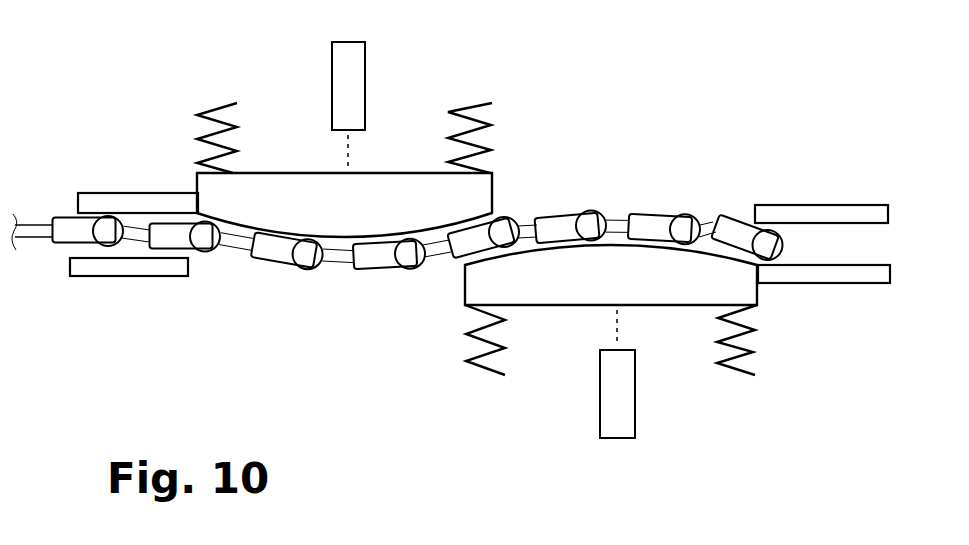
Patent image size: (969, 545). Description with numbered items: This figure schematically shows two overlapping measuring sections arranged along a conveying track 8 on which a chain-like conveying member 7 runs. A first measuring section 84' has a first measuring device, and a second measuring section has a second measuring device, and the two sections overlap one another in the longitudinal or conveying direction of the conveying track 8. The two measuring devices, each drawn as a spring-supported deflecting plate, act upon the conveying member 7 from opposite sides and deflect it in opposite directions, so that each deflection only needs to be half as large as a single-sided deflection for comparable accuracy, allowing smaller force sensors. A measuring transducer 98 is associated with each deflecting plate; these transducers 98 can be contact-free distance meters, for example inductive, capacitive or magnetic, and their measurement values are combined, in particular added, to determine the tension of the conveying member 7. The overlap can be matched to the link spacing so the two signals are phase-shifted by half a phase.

The conveying member 7 is at (647, 220).
The conveying track 8 is at (800, 212).
The first measuring section 84' is at (252, 296).
The measuring transducer 98 is at (365, 68).